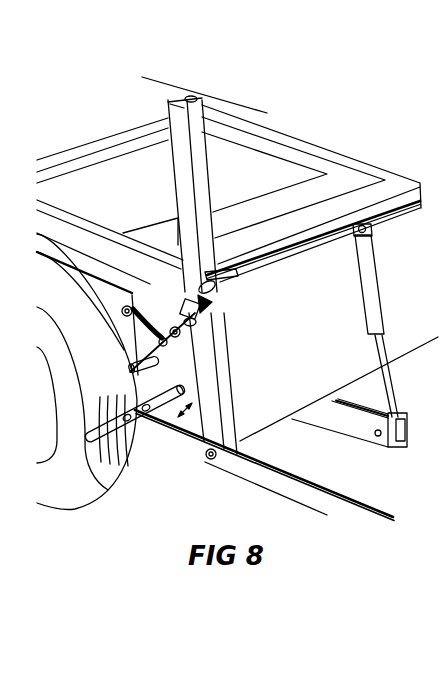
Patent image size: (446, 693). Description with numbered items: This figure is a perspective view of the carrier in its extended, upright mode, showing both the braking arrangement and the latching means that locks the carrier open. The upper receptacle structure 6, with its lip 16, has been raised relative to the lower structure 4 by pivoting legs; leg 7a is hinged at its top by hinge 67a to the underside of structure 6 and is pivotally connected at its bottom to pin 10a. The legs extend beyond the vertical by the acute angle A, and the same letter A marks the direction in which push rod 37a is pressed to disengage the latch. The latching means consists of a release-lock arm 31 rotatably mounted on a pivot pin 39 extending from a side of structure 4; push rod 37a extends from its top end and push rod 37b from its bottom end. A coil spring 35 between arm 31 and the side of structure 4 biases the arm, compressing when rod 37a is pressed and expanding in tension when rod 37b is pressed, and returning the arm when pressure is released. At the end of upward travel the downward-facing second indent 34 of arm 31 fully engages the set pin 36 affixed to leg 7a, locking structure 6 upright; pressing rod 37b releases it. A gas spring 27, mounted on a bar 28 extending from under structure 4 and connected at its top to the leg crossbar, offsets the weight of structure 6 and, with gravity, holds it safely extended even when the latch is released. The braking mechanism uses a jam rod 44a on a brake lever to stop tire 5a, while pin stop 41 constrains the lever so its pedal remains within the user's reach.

The structure 4 is at (295, 368).
The tire 5a is at (73, 308).
The structure 6 is at (213, 80).
The leg 7a is at (181, 112).
The pin 10a is at (213, 459).
The lip 16 is at (311, 177).
The gas spring 27 is at (363, 300).
The bar 28 is at (345, 433).
The release-lock arm 31 is at (168, 296).
The second indent 34 is at (204, 316).
The coil spring 35 is at (140, 231).
The set pin 36 is at (203, 334).
The push rod 37a is at (222, 296).
The push rod 37b is at (131, 364).
The pivot pin 39 is at (155, 280).
The pin stop 41 is at (127, 397).
The jam rod 44a is at (110, 437).
The hinge 67a is at (191, 99).
The arrow / acute angle A is at (188, 418).